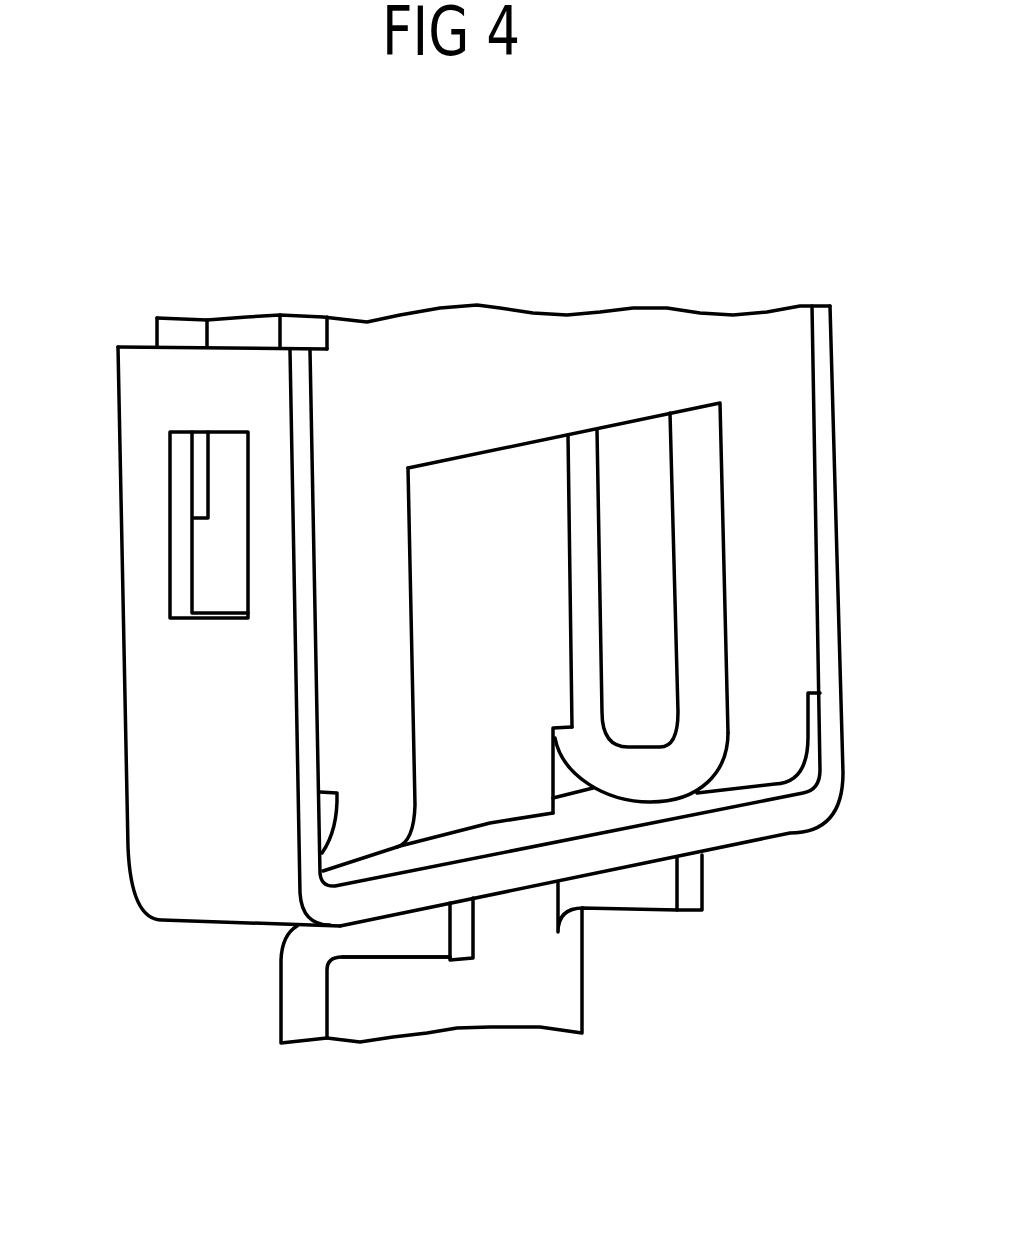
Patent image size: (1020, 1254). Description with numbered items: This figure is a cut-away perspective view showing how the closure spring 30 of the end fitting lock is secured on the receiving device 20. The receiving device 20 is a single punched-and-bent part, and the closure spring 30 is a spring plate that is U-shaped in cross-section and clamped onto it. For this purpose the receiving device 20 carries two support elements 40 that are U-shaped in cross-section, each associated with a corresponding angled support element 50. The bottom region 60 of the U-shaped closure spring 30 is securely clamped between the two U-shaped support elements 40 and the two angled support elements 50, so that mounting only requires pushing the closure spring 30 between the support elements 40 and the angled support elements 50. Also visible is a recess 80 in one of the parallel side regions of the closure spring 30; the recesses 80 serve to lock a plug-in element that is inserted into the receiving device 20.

The receiving device 20 is at (583, 363).
The closure spring 30 is at (195, 860).
The support element 40 is at (332, 447).
The angled support element 50 is at (413, 932).
The bottom region 60 is at (517, 873).
The recess 80 is at (215, 578).